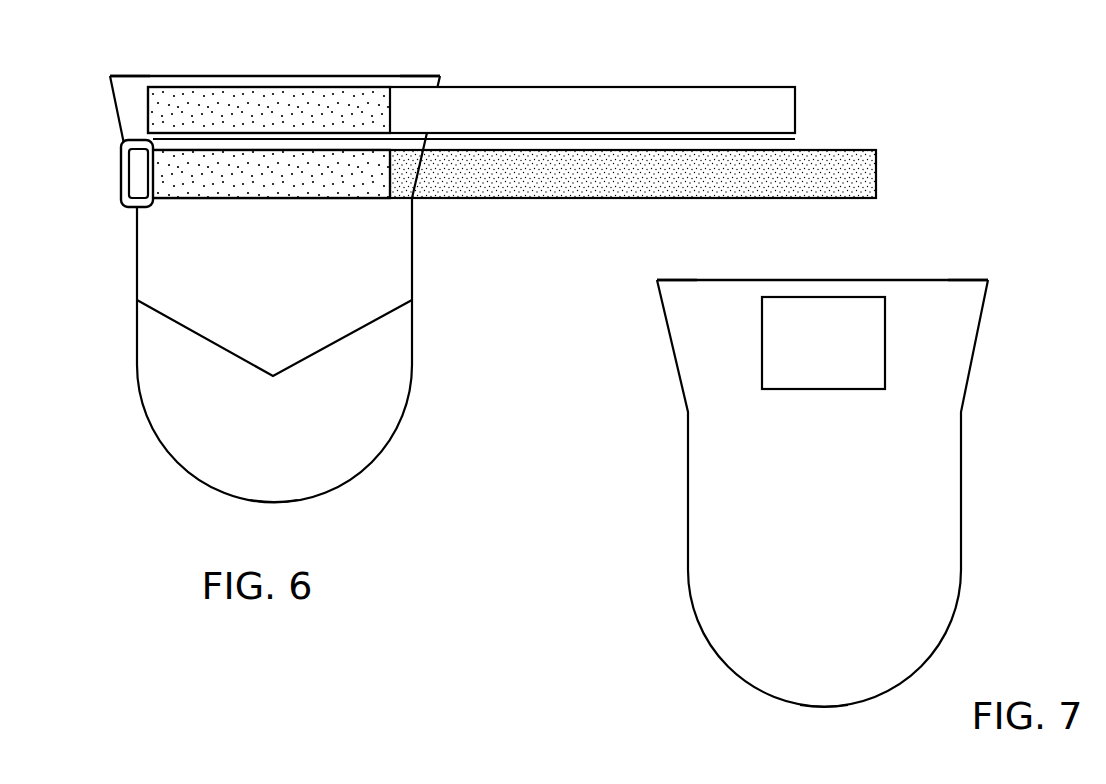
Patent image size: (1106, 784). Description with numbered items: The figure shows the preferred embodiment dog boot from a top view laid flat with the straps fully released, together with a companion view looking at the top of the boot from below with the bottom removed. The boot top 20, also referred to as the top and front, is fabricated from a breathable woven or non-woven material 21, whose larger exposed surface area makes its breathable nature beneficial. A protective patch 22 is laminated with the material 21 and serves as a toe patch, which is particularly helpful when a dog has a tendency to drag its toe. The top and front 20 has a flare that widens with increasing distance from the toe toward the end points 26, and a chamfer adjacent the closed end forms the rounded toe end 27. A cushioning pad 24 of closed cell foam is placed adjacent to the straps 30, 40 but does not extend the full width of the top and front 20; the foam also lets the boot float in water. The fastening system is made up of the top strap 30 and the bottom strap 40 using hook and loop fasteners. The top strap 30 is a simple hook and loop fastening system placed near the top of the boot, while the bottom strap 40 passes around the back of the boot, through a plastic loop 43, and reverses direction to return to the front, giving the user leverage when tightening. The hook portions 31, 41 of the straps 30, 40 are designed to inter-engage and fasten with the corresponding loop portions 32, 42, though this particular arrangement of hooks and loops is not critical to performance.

In FIG. 6, the boot top 20 is at (416, 344).
In FIG. 6, the material 21 is at (284, 271).
In FIG. 7, the material 21 is at (815, 519).
In FIG. 6, the protective patch 22 is at (285, 430).
In FIG. 7, the cushioning pad 24 is at (814, 348).
In FIG. 6, the end points 26 is at (110, 76).
In FIG. 7, the end points 26 is at (657, 280).
In FIG. 6, the rounded toe end 27 is at (264, 502).
In FIG. 7, the rounded toe end 27 is at (822, 706).
In FIG. 6, the top strap 30 is at (748, 80).
In FIG. 6, the hook portion 31 is at (278, 92).
In FIG. 6, the loop portion 32 is at (584, 122).
In FIG. 6, the bottom strap 40 is at (840, 144).
In FIG. 6, the hook portion 41 is at (258, 190).
In FIG. 6, the loop portion 42 is at (547, 187).
In FIG. 6, the plastic loop 43 is at (122, 165).